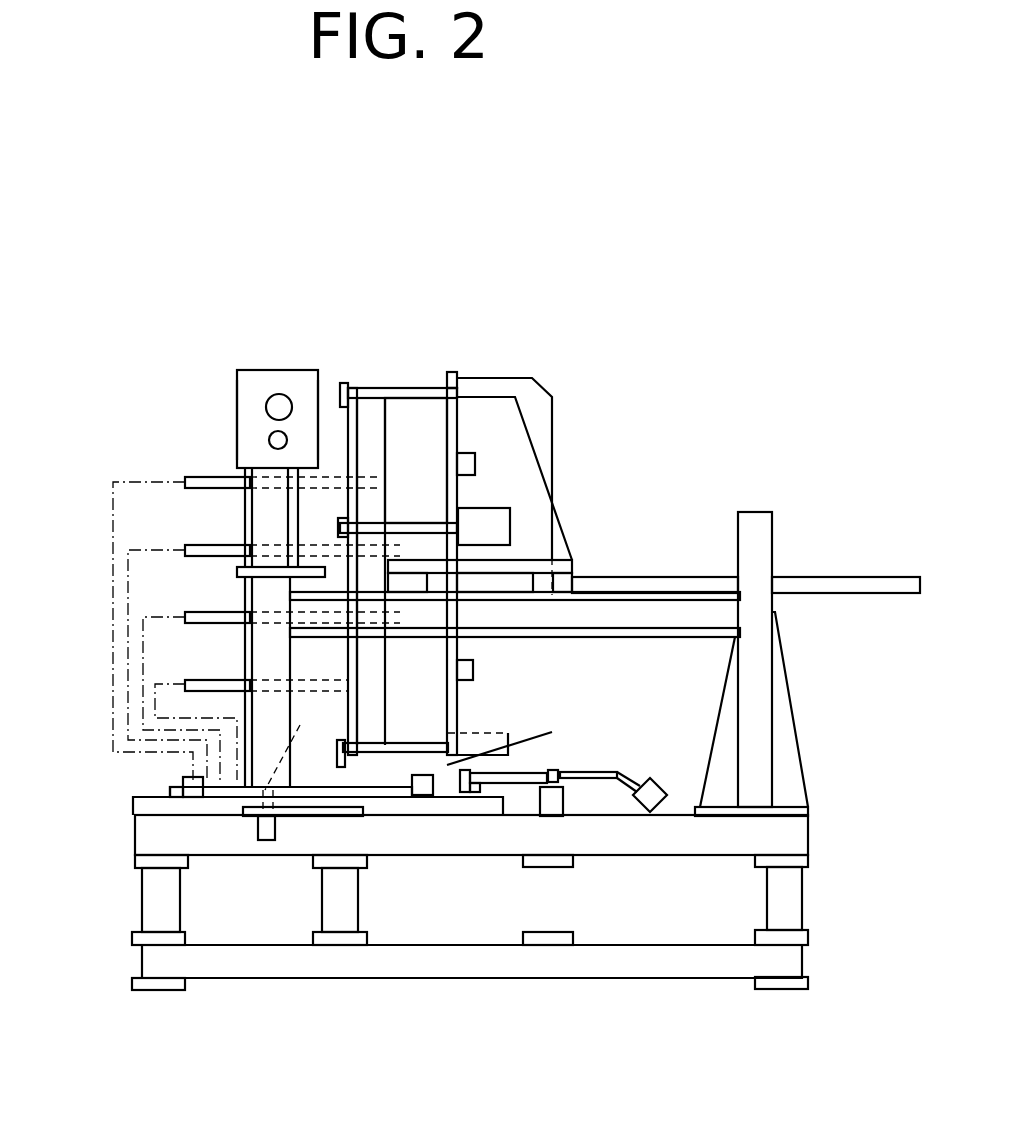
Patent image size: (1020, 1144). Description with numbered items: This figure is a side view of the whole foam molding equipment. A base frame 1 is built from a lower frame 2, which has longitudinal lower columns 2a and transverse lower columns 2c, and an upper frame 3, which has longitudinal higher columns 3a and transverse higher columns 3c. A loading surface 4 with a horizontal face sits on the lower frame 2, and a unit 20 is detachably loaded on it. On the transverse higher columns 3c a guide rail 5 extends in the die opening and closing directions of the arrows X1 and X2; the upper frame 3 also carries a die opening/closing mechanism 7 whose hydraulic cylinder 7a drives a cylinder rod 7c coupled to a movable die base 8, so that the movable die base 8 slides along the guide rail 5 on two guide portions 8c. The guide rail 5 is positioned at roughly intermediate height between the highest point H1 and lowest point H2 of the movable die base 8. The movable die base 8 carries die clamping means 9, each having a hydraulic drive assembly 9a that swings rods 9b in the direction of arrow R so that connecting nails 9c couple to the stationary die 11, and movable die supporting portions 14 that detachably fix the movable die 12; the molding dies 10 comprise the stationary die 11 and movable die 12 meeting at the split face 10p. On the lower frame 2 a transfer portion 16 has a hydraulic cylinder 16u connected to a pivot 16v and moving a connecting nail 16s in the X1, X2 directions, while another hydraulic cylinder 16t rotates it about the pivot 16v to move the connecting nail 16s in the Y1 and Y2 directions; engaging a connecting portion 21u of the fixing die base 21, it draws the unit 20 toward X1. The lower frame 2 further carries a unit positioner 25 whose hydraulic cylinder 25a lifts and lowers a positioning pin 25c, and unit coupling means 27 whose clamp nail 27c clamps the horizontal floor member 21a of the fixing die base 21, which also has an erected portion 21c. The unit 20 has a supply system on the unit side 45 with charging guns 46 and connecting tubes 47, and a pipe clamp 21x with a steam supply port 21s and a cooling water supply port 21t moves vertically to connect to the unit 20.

The base frame 1 is at (814, 905).
The lower frame 2 is at (795, 833).
The longitudinal lower columns 2a is at (142, 900).
The transverse lower columns 2c is at (215, 845).
The upper frame 3 is at (760, 705).
The longitudinal higher columns 3a is at (260, 705).
The transverse higher columns 3c is at (661, 638).
The loading surface 4 is at (400, 800).
The guide rail 5 is at (641, 593).
The die opening/closing mechanism 7 is at (878, 590).
The hydraulic cylinder 7a is at (810, 590).
The cylinder rod 7c is at (703, 590).
The movable die base 8 is at (572, 562).
The guide portions 8c is at (410, 585).
The die clamping means 9 is at (493, 387).
The hydraulic drive assembly 9a is at (470, 387).
The rods 9b is at (430, 393).
The connecting nails 9c is at (341, 385).
The molding dies 10 is at (396, 366).
The split face 10p is at (465, 417).
The stationary die 11 is at (371, 405).
The movable die 12 is at (402, 405).
The movable die supporting portions 14 is at (475, 462).
The transfer portion 16 is at (587, 794).
The connecting nail 16s is at (475, 762).
The hydraulic cylinder 16t is at (655, 790).
The hydraulic cylinder 16u is at (590, 775).
The pivot 16v is at (560, 775).
The unit 20 is at (206, 398).
The fixing die base 21 is at (373, 818).
The horizontal floor member 21a is at (396, 743).
The erected portion 21c is at (335, 425).
The steam supply port 21s is at (280, 394).
The cooling water supply port 21t is at (240, 440).
The connecting portion 21u is at (472, 793).
The pipe clamp 21x is at (262, 385).
The unit positioner 25 is at (280, 818).
The hydraulic cylinder 25a is at (255, 842).
The positioning pin 25c is at (305, 741).
The unit coupling means 27 is at (181, 782).
The clamp nail 27c is at (183, 778).
The supply system on the unit side 45 is at (96, 528).
The charging guns 46 is at (207, 476).
The connecting tube 47 is at (137, 480).
The highest point H1 is at (552, 382).
The lowest point H2 is at (434, 797).
The arrow R is at (372, 352).
The arrow X1 is at (724, 305).
The arrow X2 is at (640, 305).
The arrow Y1 is at (317, 268).
The arrow Y2 is at (317, 258).